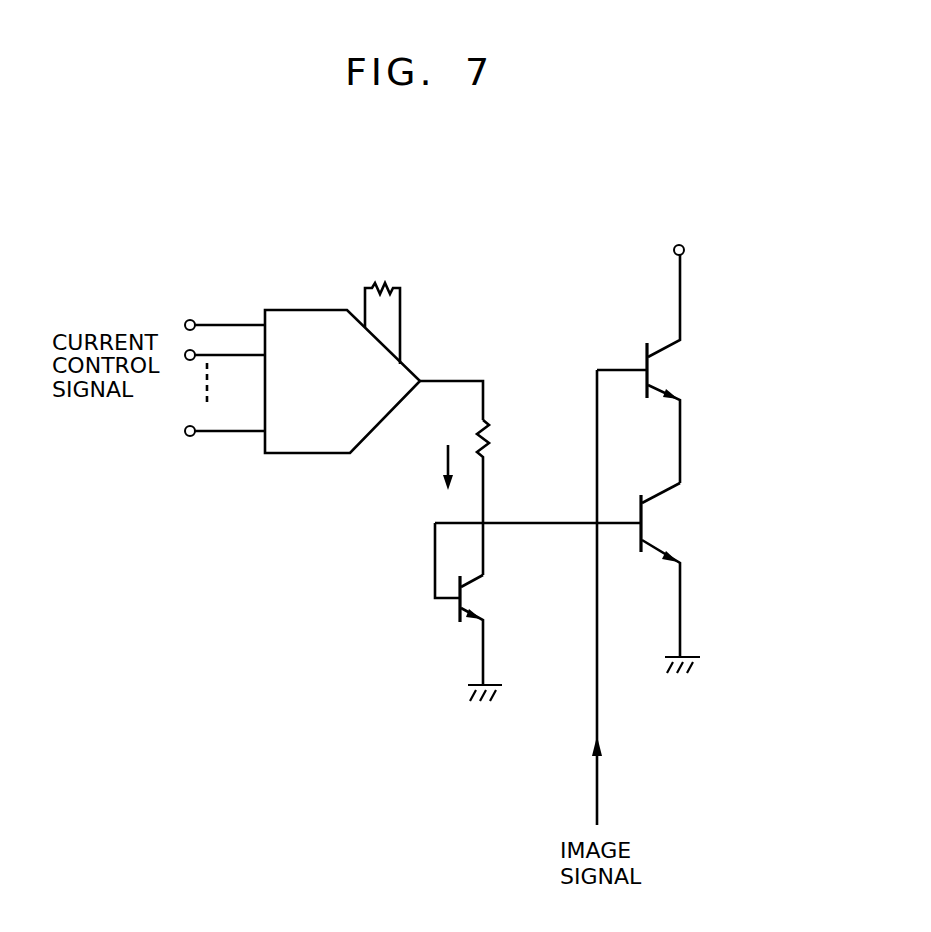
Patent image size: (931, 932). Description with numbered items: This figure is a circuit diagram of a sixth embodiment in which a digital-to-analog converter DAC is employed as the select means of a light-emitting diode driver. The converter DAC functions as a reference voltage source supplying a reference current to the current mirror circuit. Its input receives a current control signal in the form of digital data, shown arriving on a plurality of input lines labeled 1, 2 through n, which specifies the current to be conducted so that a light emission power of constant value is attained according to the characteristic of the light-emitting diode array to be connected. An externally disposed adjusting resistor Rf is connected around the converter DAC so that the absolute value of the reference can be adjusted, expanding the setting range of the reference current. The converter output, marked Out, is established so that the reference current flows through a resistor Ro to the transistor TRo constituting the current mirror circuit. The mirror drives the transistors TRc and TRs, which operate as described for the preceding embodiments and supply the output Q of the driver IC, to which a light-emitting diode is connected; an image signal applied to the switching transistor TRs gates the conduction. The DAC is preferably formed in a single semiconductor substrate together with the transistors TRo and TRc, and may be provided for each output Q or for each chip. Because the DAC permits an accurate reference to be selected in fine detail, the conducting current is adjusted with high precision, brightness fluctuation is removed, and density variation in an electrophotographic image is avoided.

The digital-to-analog converter DAC is at (291, 308).
The adjusting resistor Rf is at (386, 284).
The DAC output Out is at (467, 379).
The output resistor Ro is at (496, 446).
The transistor TRo is at (458, 612).
The transistor TRs is at (678, 379).
The transistor TRc is at (678, 541).
The output Q is at (685, 245).
The current control signal input 1 is at (207, 320).
The current control signal input 2 is at (225, 342).
The current control signal input n is at (225, 416).